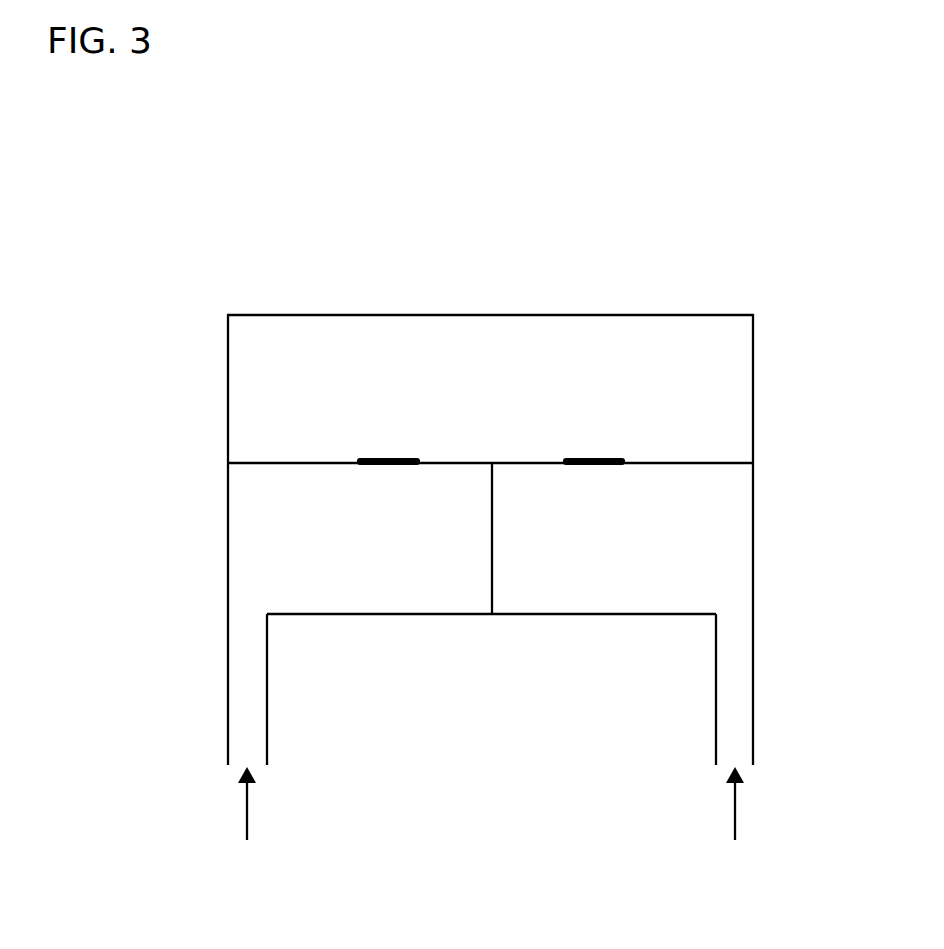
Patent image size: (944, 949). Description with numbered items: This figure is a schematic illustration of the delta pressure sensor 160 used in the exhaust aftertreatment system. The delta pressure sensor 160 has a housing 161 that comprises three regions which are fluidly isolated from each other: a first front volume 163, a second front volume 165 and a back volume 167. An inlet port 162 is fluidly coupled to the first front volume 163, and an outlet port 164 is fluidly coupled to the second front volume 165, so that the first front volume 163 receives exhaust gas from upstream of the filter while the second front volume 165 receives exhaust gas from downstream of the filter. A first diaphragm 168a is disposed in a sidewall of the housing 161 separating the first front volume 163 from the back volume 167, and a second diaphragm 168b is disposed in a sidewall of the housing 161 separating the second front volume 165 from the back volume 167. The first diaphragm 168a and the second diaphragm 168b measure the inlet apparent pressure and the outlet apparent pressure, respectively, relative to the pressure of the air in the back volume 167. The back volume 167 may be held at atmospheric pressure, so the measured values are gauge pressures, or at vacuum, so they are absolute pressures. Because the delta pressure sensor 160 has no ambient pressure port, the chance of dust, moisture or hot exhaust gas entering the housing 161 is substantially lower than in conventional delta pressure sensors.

The delta pressure sensor 160 is at (737, 222).
The housing 161 is at (227, 483).
The inlet port 162 is at (248, 727).
The first front volume 163 is at (252, 543).
The outlet port 164 is at (735, 713).
The second front volume 165 is at (735, 540).
The back volume 167 is at (368, 340).
The first diaphragm 168a is at (357, 460).
The second diaphragm 168b is at (608, 458).